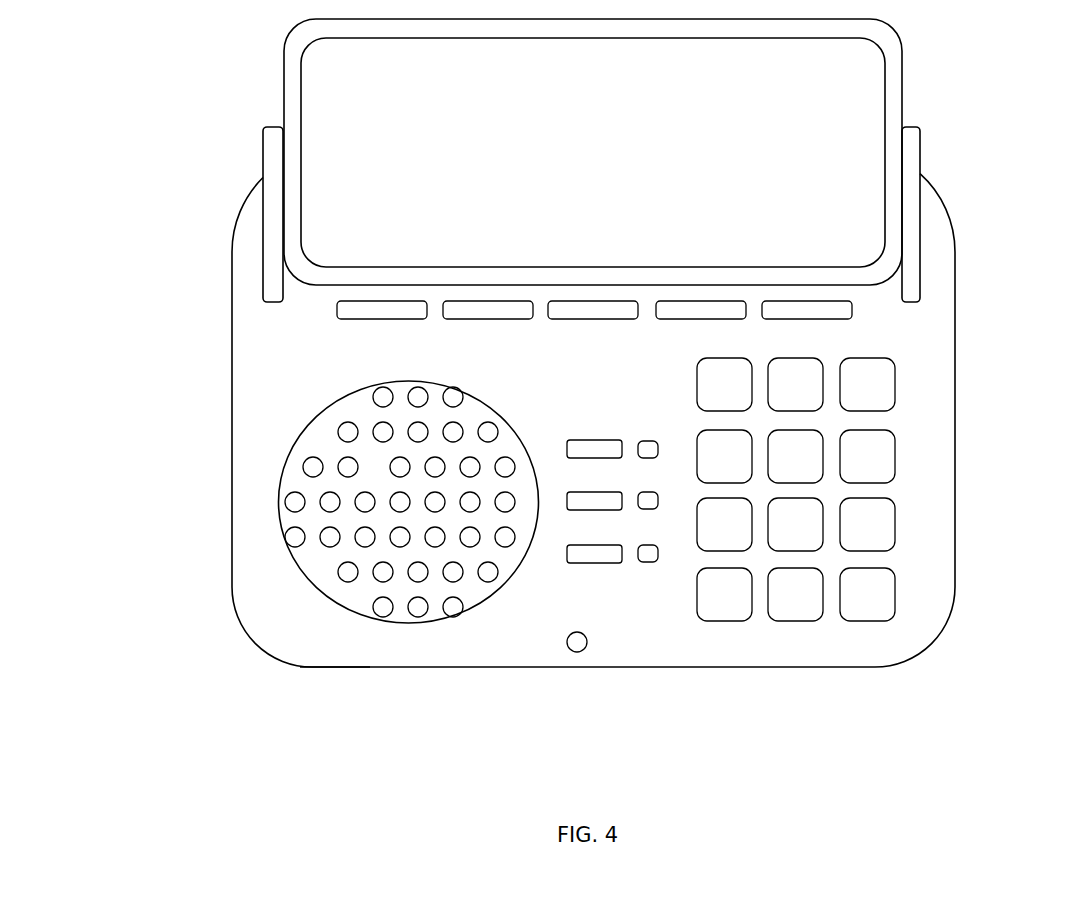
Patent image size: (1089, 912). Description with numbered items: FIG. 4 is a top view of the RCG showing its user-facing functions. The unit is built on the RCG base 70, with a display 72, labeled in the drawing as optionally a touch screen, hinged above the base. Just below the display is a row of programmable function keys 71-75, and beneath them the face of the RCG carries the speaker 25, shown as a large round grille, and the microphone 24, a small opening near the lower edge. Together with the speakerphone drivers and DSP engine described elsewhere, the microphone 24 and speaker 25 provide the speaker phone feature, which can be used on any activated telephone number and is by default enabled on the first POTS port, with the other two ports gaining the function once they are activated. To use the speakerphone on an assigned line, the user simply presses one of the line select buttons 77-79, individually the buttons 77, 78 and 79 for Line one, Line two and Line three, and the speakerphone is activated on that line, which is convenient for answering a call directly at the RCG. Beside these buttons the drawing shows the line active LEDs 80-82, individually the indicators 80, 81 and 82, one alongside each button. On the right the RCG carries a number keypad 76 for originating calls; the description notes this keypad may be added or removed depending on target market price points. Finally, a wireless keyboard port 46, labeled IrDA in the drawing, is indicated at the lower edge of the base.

The RCG base 70 is at (257, 442).
The display (optionally a touch screen) 72 is at (335, 75).
The programmable function keys 71-75 is at (330, 312).
The speaker 25 is at (283, 528).
The line select buttons 77-79 is at (512, 440).
The line select button 77 is at (594, 449).
The line select button 78 is at (594, 501).
The line select button 79 is at (594, 554).
The line active LEDs 80-82 is at (731, 589).
The line select button 80 is at (648, 449).
The line select button 81 is at (648, 500).
The line active LED 82 is at (652, 562).
The number keypad 76 is at (895, 362).
The microphone 24 is at (568, 657).
The wireless keyboard port - IrDA 46 is at (345, 668).